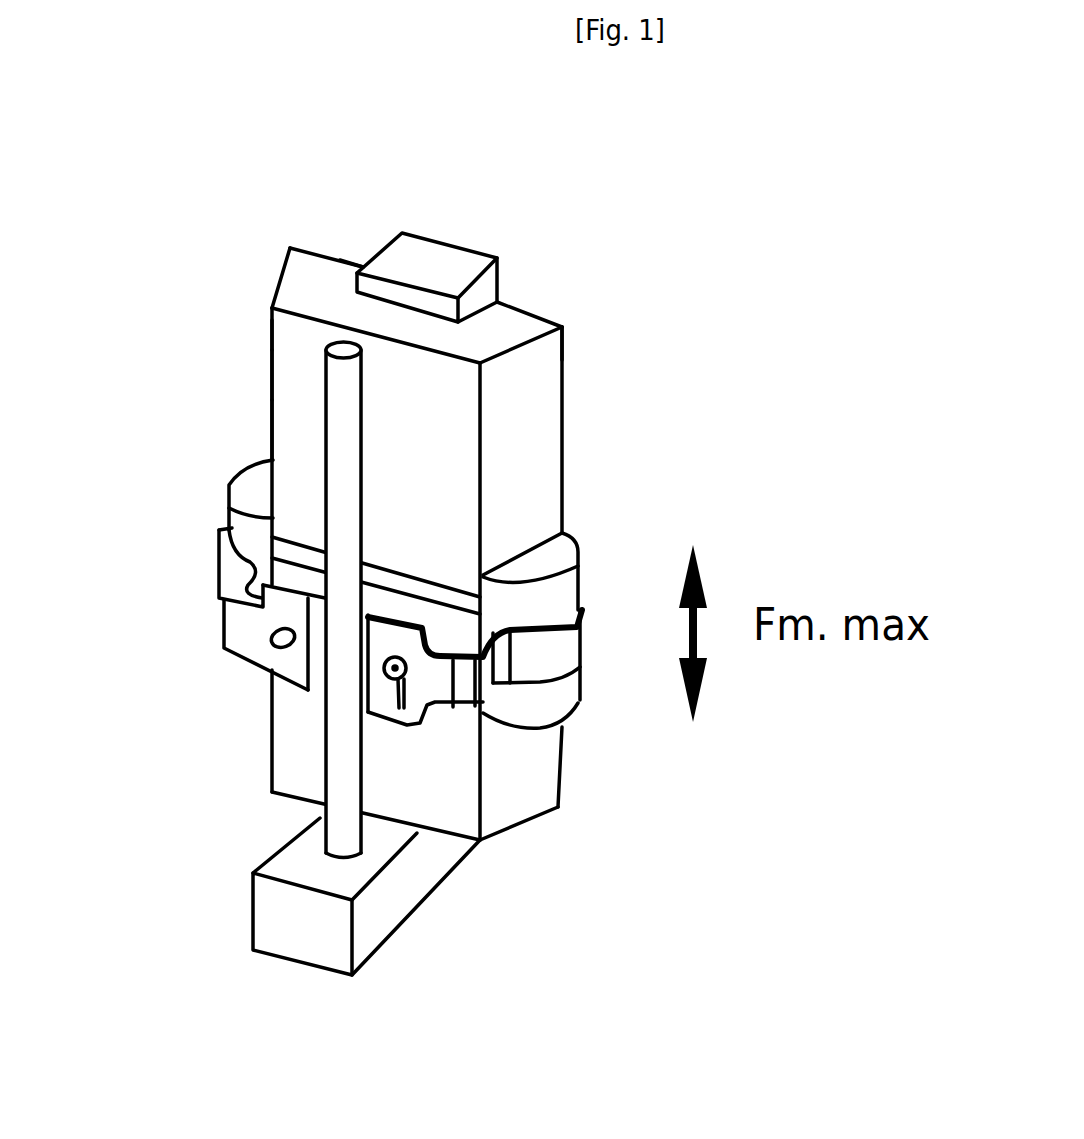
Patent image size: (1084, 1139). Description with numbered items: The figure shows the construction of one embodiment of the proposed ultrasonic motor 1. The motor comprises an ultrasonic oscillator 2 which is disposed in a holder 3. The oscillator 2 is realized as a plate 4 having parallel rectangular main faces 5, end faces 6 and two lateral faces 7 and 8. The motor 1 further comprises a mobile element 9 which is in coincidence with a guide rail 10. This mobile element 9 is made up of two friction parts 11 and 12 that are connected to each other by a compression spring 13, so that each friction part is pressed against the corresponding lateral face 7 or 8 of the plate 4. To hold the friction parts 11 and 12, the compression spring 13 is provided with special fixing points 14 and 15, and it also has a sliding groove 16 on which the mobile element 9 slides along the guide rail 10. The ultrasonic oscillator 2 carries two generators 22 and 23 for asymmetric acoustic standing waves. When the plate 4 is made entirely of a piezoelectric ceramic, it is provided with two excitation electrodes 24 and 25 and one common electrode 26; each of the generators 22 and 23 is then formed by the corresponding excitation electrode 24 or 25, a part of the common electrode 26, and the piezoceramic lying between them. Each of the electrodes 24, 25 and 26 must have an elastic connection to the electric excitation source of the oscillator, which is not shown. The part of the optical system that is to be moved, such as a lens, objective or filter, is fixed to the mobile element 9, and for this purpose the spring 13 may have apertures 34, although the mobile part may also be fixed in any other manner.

The ultrasonic motor 1 is at (538, 262).
The ultrasonic oscillator 2 is at (518, 442).
The holder 3 is at (427, 263).
The plate 4 is at (327, 282).
The main faces 5 is at (546, 305).
The end faces 6 is at (298, 288).
The lateral face 7 is at (268, 337).
The lateral face 8 is at (522, 397).
The mobile element 9 is at (245, 632).
The guide rail 10 is at (347, 753).
The friction part 11 is at (257, 488).
The friction part 12 is at (540, 567).
The compression spring 13 is at (432, 678).
The fixing point 14 is at (218, 563).
The fixing point 15 is at (567, 647).
The sliding groove 16 is at (305, 667).
The generator 22 is at (522, 490).
The generator 23 is at (520, 773).
The excitation electrode 24 is at (300, 432).
The excitation electrode 25 is at (303, 728).
The common electrode 26 is at (342, 257).
The apertures 34 is at (403, 710).